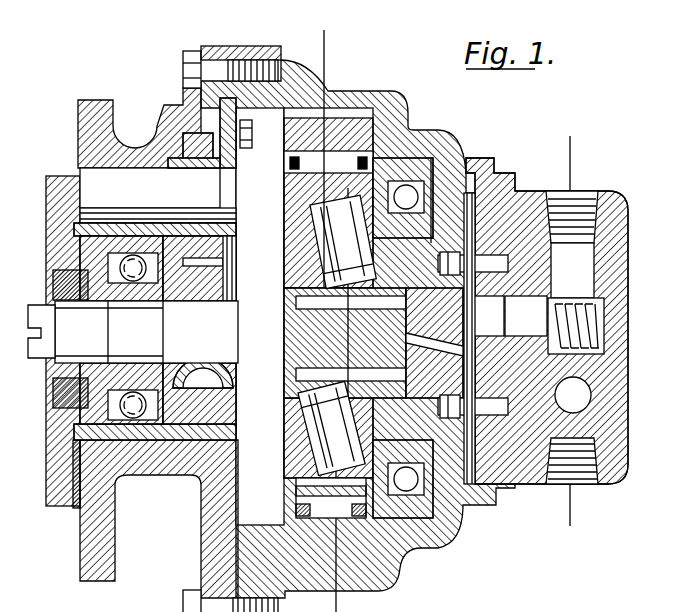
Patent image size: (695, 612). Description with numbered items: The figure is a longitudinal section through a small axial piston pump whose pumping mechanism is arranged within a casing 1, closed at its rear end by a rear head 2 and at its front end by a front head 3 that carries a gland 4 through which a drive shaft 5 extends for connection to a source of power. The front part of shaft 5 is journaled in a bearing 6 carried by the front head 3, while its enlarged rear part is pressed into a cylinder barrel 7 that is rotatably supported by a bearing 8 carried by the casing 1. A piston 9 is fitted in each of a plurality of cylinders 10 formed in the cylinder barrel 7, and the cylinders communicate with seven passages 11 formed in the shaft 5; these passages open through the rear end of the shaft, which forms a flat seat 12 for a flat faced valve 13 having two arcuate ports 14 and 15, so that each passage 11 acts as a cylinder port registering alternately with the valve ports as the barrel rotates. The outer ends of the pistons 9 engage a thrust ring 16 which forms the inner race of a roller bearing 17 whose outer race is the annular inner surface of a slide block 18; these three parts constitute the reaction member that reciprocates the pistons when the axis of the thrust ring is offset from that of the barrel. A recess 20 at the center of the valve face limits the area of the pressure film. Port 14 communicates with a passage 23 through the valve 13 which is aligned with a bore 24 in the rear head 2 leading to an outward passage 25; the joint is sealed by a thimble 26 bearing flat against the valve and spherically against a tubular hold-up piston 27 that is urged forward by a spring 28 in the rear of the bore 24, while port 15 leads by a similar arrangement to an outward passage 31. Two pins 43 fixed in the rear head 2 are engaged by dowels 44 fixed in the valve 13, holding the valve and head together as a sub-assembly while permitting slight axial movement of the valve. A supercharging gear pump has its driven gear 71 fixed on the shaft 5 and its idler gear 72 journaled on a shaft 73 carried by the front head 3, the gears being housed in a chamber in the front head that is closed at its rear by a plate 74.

The casing 1 is at (413, 127).
The rear head 2 is at (316, 22).
The front head 3 is at (88, 92).
The gland 4 is at (44, 168).
The drive shaft 5 is at (133, 339).
The bearing 6 is at (130, 284).
The cylinder barrel 7 is at (276, 223).
The bearing 8 is at (440, 178).
The piston 9 is at (337, 335).
The cylinder 10 is at (268, 422).
The passage 11 is at (288, 292).
The seat 12 is at (396, 295).
The valve 13 is at (450, 375).
The port 14 is at (418, 303).
The port 15 is at (362, 374).
The thrust ring 16 is at (288, 489).
The roller bearing 17 is at (310, 500).
The slide block 18 is at (390, 553).
The recess 20 is at (470, 350).
The passage 23 is at (434, 343).
The bore 24 is at (598, 306).
The passage 25 is at (574, 186).
The thimble 26 is at (486, 316).
The hold-up piston 27 is at (526, 316).
The spring 28 is at (572, 244).
The passage 31 is at (572, 430).
The pin 43 is at (473, 335).
The dowel 44 is at (450, 232).
The driven gear 71 is at (192, 275).
The idler gear 72 is at (203, 160).
The shaft 73 is at (150, 188).
The plate 74 is at (216, 280).